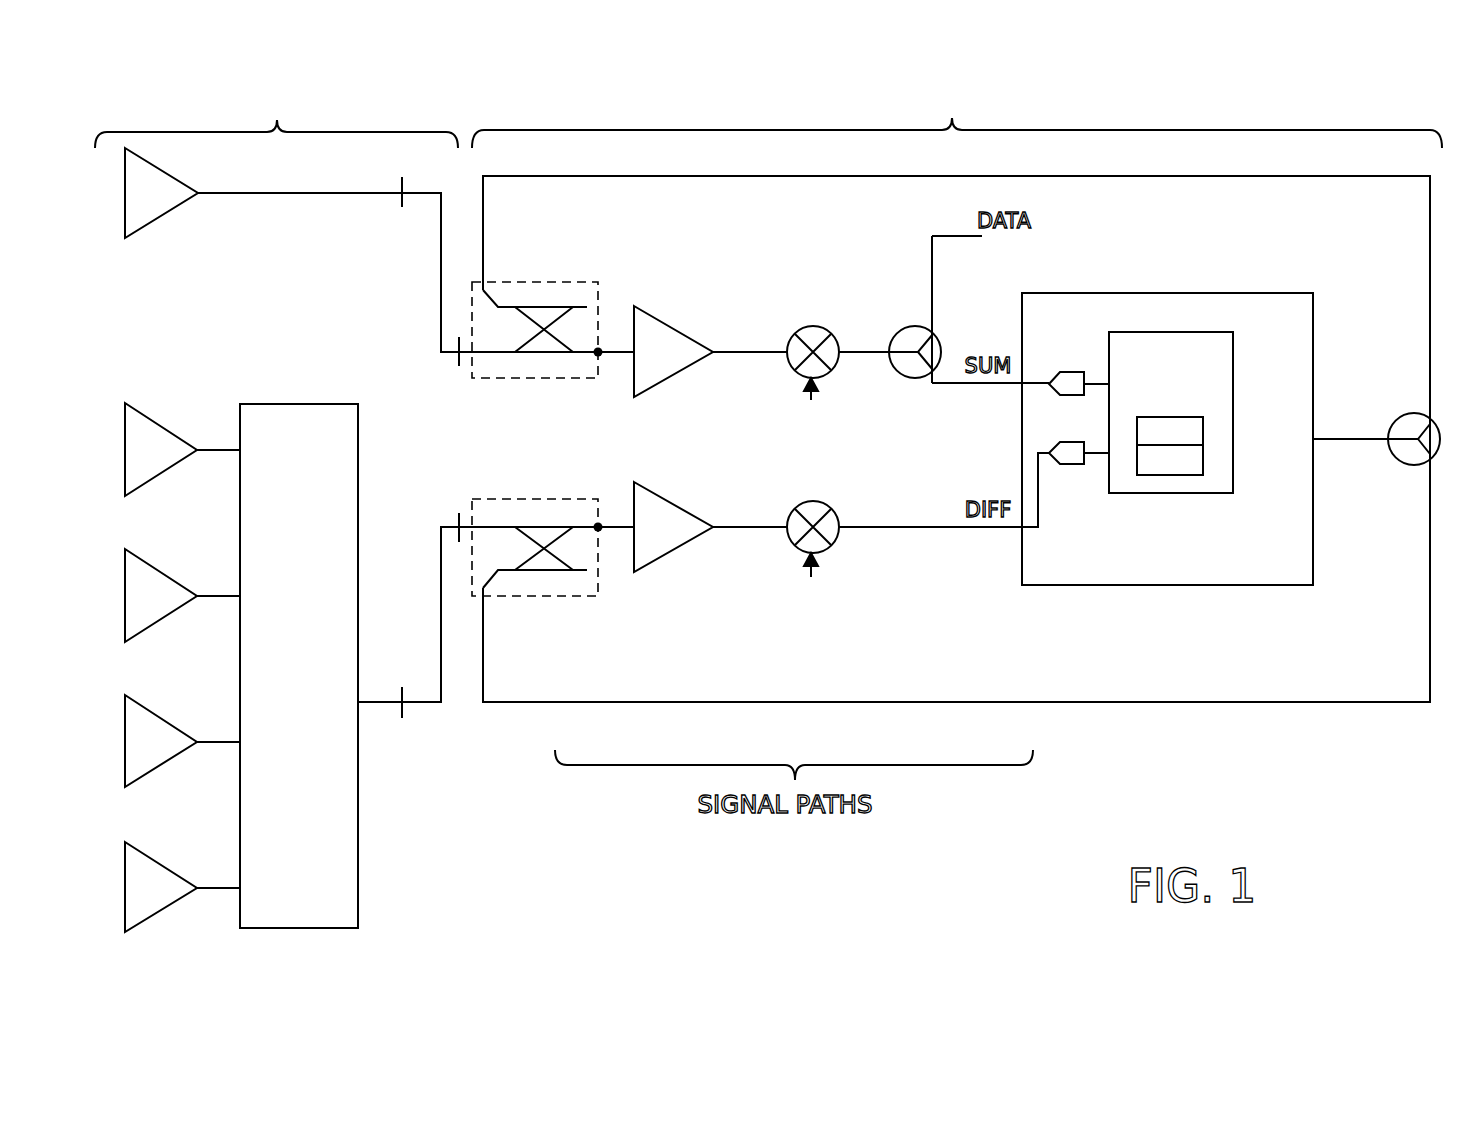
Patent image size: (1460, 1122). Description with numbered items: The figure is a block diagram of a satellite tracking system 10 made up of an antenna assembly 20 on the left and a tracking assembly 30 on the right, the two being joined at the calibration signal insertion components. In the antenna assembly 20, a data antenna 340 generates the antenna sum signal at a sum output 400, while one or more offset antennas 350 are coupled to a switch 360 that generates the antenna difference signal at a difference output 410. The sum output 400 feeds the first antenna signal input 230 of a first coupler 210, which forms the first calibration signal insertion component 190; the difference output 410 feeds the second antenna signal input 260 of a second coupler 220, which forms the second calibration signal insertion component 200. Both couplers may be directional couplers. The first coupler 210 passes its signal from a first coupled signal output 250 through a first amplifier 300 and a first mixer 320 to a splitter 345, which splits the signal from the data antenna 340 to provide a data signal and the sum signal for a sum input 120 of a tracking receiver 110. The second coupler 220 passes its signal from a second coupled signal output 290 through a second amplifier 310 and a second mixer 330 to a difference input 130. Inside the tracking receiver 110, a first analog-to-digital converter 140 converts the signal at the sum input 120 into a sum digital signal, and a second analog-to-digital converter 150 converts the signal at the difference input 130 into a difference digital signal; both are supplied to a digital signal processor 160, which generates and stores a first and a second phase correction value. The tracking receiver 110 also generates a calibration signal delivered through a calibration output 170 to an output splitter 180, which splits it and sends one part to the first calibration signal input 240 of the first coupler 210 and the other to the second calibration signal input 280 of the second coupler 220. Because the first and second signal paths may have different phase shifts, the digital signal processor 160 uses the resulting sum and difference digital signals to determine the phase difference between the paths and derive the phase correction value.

The tracking system 10 is at (617, 45).
The antenna assembly 20 is at (276, 119).
The tracking assembly 30 is at (957, 120).
The tracking receiver 110 is at (1313, 570).
The sum input 120 is at (987, 383).
The difference input 130 is at (985, 527).
The first analog-to-digital converter 140 is at (1082, 371).
The second analog-to-digital converter 150 is at (1075, 465).
The digital signal processor 160 is at (1151, 396).
The calibration output 170 is at (1365, 443).
The output splitter 180 is at (1397, 413).
The first calibration signal insertion component 190 is at (570, 282).
The second calibration signal insertion component 200 is at (513, 499).
The first coupler 210 is at (537, 343).
The second coupler 220 is at (542, 562).
The first antenna signal input 230 is at (466, 362).
The first calibration signal input 240 is at (484, 281).
The first coupled signal output 250 is at (613, 356).
The second antenna signal input 260 is at (461, 514).
The second calibration signal input 280 is at (484, 598).
The second coupled signal output 290 is at (620, 531).
The first amplifier 300 is at (643, 364).
The second amplifier 310 is at (643, 539).
The first mixer 320 is at (826, 326).
The second mixer 330 is at (826, 501).
The data antenna 340 is at (172, 204).
The splitter 345 is at (910, 378).
The offset antennas 350 is at (168, 420).
The switch 360 is at (276, 691).
The sum output 400 is at (382, 195).
The difference output 410 is at (378, 702).